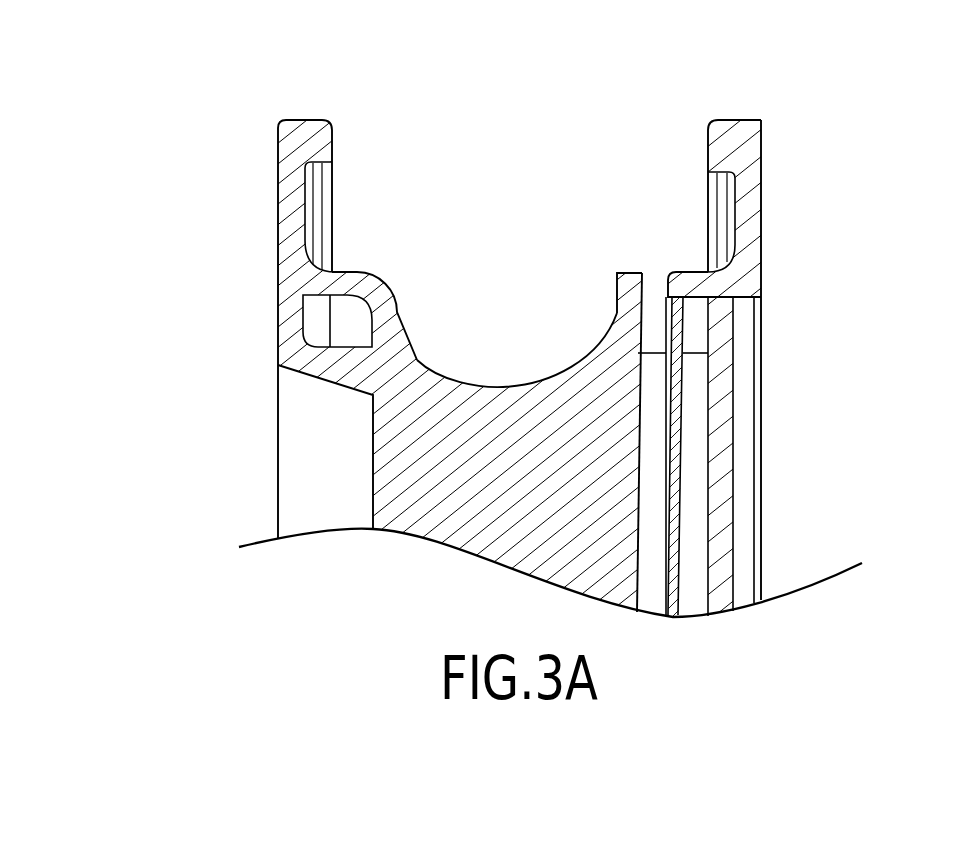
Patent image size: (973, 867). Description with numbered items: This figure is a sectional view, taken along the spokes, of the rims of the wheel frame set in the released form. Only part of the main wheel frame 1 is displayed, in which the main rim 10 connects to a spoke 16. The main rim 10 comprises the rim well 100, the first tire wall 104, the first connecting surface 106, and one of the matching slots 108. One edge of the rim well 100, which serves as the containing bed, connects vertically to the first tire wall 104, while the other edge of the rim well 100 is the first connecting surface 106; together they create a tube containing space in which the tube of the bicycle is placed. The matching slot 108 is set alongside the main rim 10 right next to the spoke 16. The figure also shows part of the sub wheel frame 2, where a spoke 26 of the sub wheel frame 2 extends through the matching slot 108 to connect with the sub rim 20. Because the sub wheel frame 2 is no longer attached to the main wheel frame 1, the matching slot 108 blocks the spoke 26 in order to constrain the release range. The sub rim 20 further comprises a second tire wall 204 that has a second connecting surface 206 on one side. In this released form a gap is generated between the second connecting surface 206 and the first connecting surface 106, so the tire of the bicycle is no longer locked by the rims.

The main wheel frame 1 is at (486, 375).
The sub wheel frame 2 is at (509, 340).
The main rim 10 is at (326, 141).
The sub rim 20 is at (747, 132).
The rim well 100 is at (460, 375).
The first tire wall 104 is at (278, 283).
The first connecting surface 106 is at (617, 297).
The second tire wall 204 is at (762, 210).
The second connecting surface 206 is at (667, 283).
The spoke 26 is at (680, 330).
The matching slot 108 is at (693, 423).
The spoke 16 is at (638, 495).